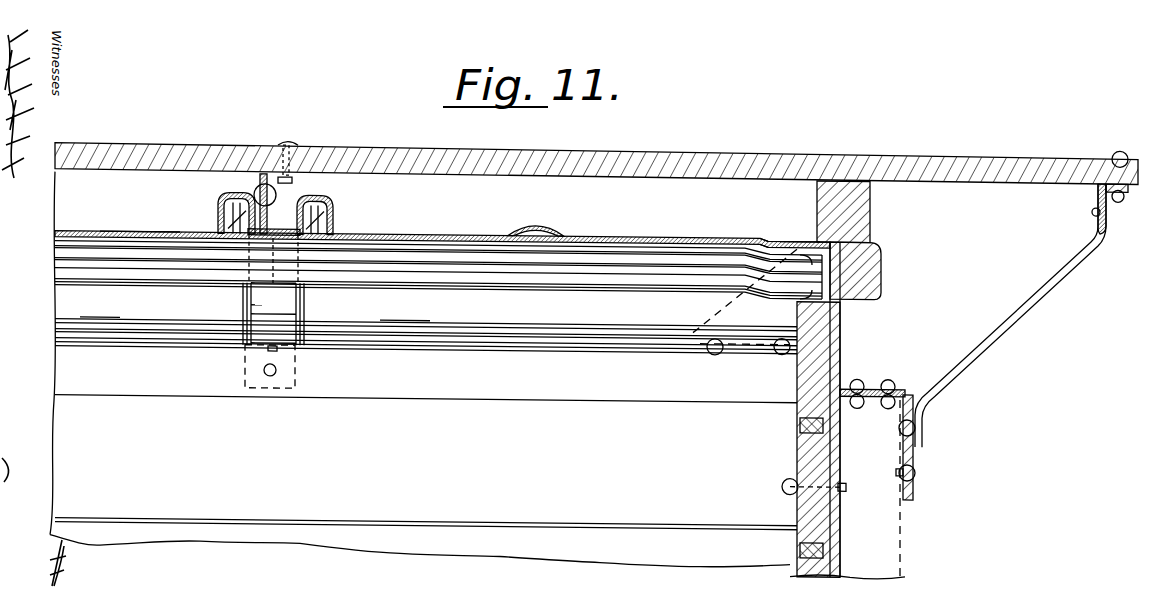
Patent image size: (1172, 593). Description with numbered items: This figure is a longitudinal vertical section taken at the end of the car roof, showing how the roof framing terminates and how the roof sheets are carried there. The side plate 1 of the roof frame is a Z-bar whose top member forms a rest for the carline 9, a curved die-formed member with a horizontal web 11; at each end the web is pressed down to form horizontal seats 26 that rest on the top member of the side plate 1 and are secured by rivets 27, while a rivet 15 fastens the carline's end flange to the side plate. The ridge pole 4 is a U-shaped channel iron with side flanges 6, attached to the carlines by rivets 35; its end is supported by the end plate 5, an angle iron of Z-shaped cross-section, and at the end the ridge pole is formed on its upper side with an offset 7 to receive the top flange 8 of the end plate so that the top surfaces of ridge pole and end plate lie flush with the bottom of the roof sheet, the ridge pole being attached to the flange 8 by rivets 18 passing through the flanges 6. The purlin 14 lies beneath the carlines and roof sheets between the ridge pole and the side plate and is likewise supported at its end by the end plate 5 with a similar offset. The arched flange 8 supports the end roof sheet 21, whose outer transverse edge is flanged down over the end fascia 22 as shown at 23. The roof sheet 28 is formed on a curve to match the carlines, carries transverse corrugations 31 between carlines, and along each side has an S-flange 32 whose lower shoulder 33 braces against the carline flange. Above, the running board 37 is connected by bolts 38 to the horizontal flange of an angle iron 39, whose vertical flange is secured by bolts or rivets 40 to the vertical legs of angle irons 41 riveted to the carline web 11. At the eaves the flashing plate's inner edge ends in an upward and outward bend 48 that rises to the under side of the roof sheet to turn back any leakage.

The side plates 1 is at (66, 366).
The ridge pole 4 is at (626, 240).
The end plate 5 is at (842, 326).
The side flanges 6 is at (688, 246).
The offset 7 is at (757, 233).
The top flange 8 is at (792, 233).
The carline 9 is at (334, 207).
The web 11 is at (250, 303).
The purlin 14 is at (548, 289).
The rivet 15 is at (278, 367).
The rivets 18 is at (746, 301).
The end roof sheet 21 is at (440, 229).
The end fascia 22 is at (866, 285).
The downturned flange 23 is at (884, 271).
The horizontal seats 26 is at (273, 331).
The rivets 27 is at (267, 345).
The roof sheet 28 is at (140, 229).
The transverse corrugations 31 is at (538, 217).
The S-flange 32 is at (220, 218).
The lower shoulder 33 is at (243, 300).
The rivets 35 is at (273, 299).
The running board 37 is at (846, 156).
The bolts 38 is at (289, 139).
The angle iron 39 is at (300, 178).
The bolts or rivets 40 is at (274, 229).
The angle irons 41 is at (262, 181).
The upward and outward bend 48 is at (405, 316).